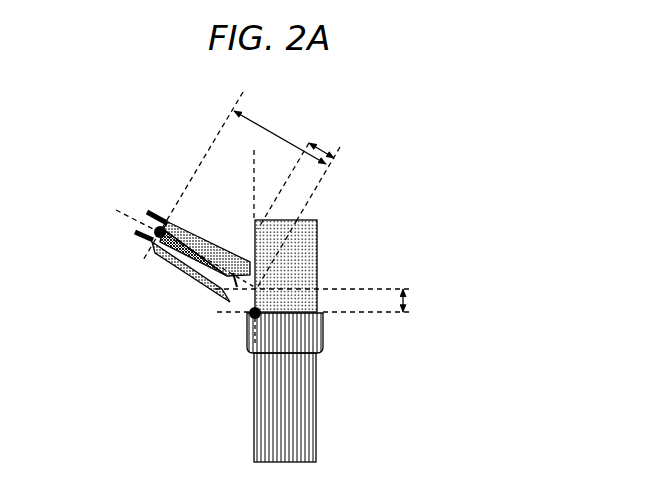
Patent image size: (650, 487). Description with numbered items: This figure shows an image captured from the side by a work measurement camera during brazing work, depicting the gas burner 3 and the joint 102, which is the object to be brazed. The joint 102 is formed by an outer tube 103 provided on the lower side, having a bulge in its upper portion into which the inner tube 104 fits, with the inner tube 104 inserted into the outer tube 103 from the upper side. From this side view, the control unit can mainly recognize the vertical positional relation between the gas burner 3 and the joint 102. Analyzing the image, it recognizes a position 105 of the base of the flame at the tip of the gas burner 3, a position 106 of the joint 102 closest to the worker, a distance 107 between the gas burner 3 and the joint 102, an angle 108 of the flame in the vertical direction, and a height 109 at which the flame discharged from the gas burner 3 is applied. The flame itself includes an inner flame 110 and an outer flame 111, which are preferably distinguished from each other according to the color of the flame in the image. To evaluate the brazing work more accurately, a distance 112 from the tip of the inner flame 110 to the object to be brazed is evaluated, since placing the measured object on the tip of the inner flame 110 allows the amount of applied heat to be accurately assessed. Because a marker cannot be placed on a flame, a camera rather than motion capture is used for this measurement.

The gas burner 3 is at (170, 222).
The joint 102 is at (325, 328).
The outer tube 103 is at (316, 428).
The inner tube 104 is at (318, 243).
The position of a base of the flame 105 is at (120, 210).
The position of the joint closest to the worker 106 is at (252, 317).
The distance between the gas burner and the joint 107 is at (288, 142).
The angle of the flame in a vertical direction 108 is at (185, 262).
The height at which the flame is applied 109 is at (407, 299).
The inner flame 110 is at (188, 232).
The outer flame 111 is at (210, 236).
The distance from a tip of the inner flame to the object to be brazed 112 is at (326, 152).